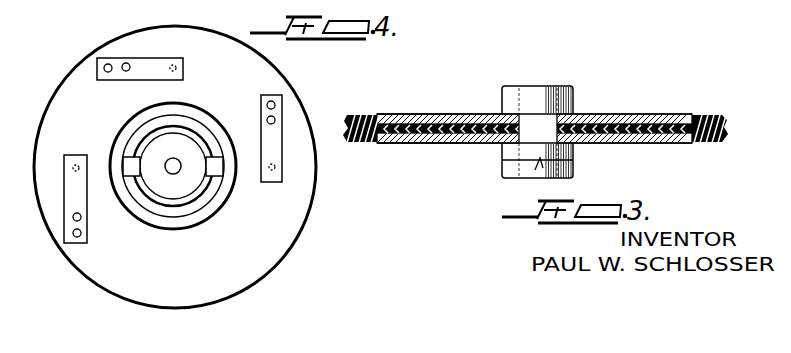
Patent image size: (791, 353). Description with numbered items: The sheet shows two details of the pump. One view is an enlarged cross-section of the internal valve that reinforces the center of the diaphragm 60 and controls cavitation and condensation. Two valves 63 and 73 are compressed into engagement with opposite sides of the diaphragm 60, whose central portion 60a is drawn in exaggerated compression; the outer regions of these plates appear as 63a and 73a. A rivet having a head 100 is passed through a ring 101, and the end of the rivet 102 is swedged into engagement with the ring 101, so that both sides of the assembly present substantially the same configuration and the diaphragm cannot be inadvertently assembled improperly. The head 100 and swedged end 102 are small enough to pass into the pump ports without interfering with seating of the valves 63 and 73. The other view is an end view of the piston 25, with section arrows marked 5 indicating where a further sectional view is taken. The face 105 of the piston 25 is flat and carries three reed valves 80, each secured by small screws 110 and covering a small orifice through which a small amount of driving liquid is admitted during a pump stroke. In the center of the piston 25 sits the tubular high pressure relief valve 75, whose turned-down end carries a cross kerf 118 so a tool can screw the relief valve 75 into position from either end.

In FIG. 3, the section line 5- 5 is at (185, 5).
In FIG. 3, the piston 25 is at (279, 274).
In FIG. 3, the face 105 is at (217, 40).
In FIG. 3, the high pressure relief valve 75 is at (152, 210).
In FIG. 3, the cross kerf 118 is at (238, 177).
In FIG. 3, the reed valve 80 is at (183, 70).
In FIG. 3, the small screws 110 is at (121, 84).
In FIG. 4, the valve 63 is at (460, 113).
In FIG. 4, the upper plate portion 63a is at (406, 113).
In FIG. 4, the valve 73 is at (462, 144).
In FIG. 4, the lower plate portion 73a is at (398, 144).
In FIG. 4, the diaphragm 60 is at (715, 144).
In FIG. 4, the central portion 60a is at (629, 144).
In FIG. 4, the head 100 is at (574, 98).
In FIG. 4, the ring 101 is at (574, 161).
In FIG. 4, the end of the rivet 102 is at (512, 178).